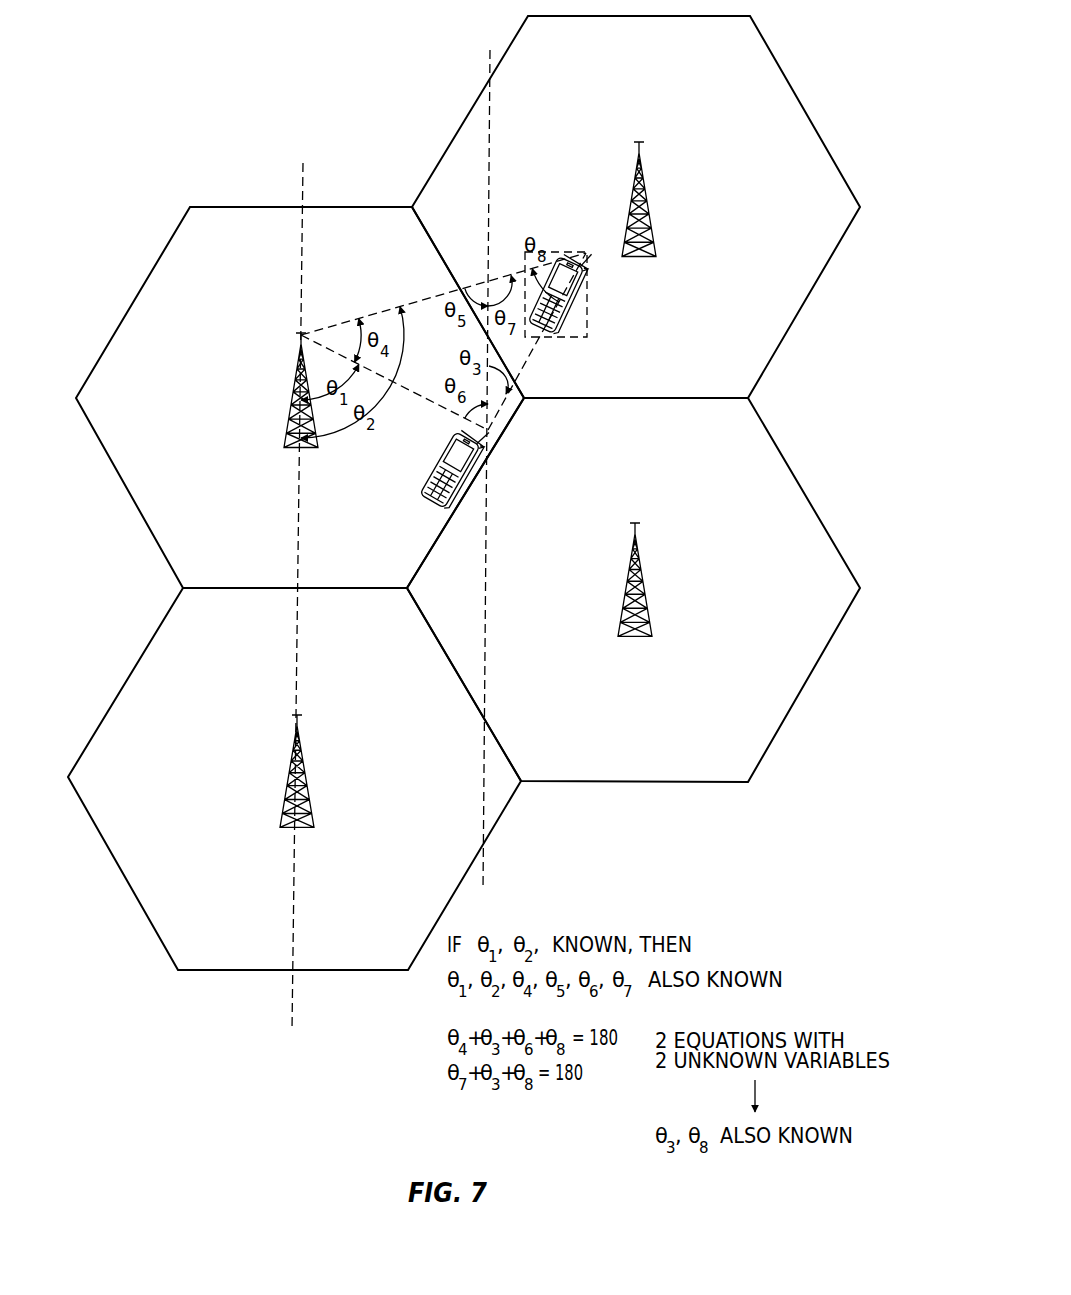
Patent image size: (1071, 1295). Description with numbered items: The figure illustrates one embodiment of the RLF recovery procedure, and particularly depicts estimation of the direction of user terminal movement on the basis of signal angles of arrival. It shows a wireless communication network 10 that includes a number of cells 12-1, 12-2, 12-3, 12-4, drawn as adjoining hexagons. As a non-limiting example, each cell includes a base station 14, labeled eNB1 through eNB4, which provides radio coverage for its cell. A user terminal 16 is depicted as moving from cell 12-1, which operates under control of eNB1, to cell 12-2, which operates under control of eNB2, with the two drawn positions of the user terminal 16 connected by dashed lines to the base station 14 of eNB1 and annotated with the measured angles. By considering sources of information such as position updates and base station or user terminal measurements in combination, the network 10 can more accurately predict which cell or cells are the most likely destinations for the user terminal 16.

The wireless communication network 10 is at (267, 63).
The cell 12-1 is at (128, 316).
The cell 12-2 is at (788, 330).
The cell 12-3 is at (806, 497).
The cell 12-4 is at (227, 972).
The base station 14 is at (466, 505).
The user terminal 16 is at (501, 385).